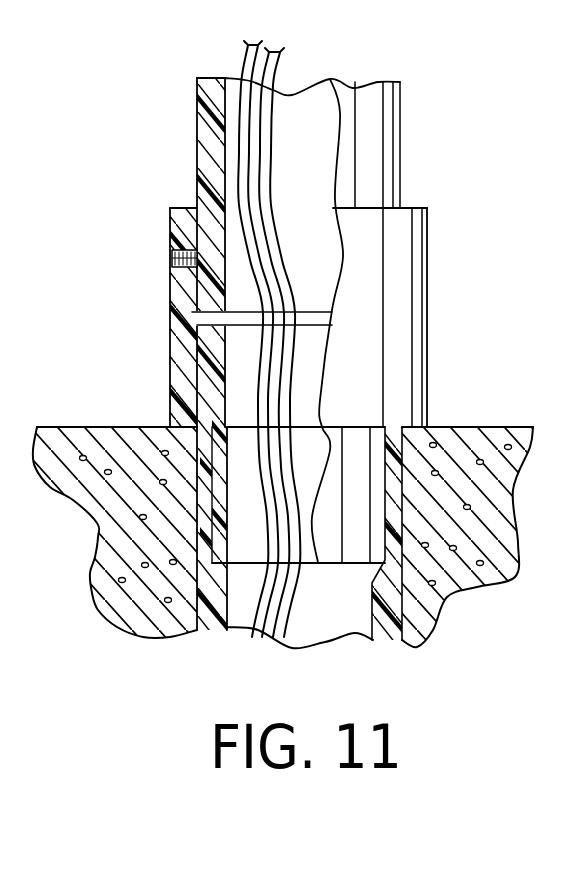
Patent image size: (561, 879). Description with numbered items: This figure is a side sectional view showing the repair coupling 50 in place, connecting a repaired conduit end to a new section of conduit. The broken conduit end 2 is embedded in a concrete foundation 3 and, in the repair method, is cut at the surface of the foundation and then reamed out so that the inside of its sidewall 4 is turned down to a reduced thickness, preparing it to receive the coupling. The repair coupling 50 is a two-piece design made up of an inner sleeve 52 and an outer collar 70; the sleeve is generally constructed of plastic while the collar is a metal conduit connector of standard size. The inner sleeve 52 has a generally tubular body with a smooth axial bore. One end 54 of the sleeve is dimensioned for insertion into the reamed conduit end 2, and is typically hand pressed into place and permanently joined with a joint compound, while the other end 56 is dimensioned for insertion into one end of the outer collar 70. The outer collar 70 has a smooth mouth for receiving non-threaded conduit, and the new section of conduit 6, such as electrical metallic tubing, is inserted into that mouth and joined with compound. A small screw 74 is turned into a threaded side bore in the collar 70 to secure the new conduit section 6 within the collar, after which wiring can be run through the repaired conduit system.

The broken conduit end 2 is at (216, 632).
The concrete foundation 3 is at (73, 427).
The conduit sidewall 4 is at (370, 607).
The new section of conduit 6 is at (205, 162).
The repair coupling 50 is at (432, 327).
The inner sleeve 52 is at (205, 338).
The one end of sleeve 54 is at (329, 540).
The other end of sleeve 56 is at (193, 373).
The outer collar 70 is at (430, 248).
The small screw 74 is at (170, 260).